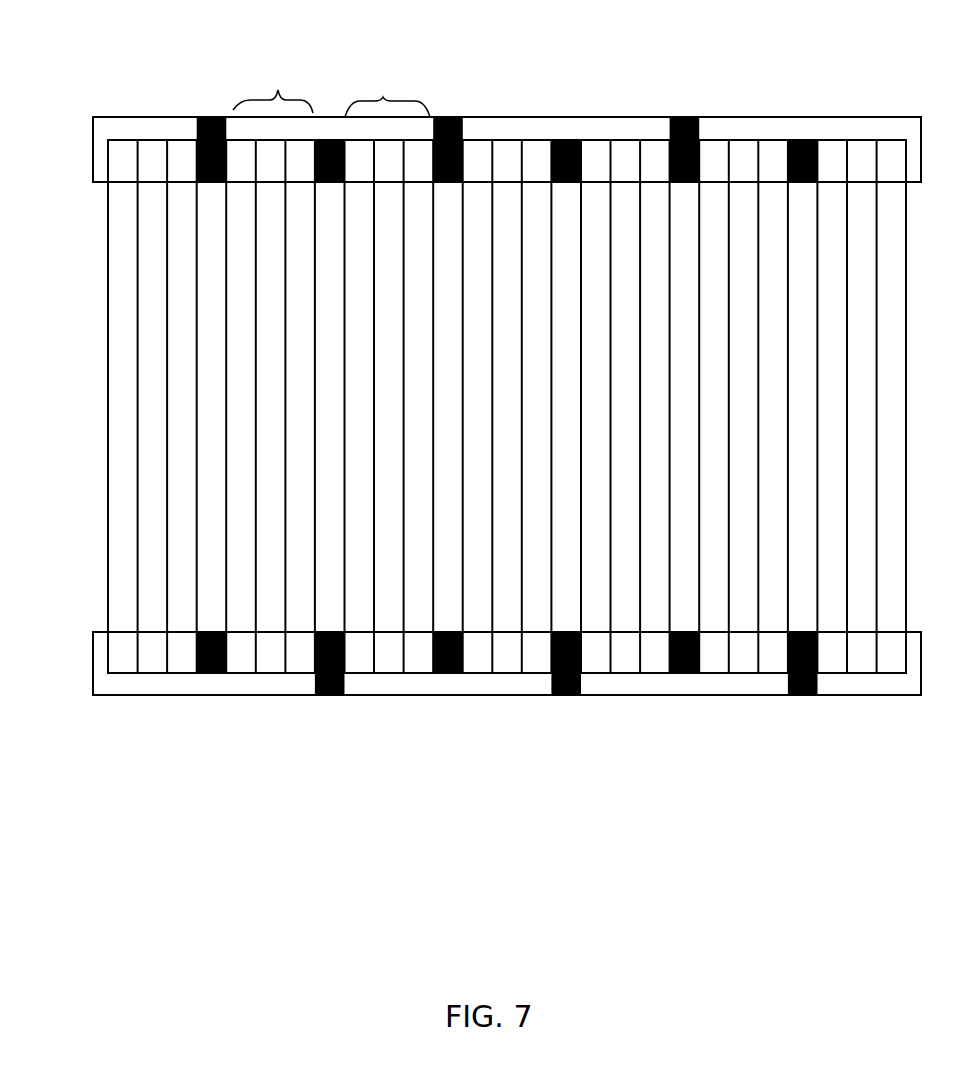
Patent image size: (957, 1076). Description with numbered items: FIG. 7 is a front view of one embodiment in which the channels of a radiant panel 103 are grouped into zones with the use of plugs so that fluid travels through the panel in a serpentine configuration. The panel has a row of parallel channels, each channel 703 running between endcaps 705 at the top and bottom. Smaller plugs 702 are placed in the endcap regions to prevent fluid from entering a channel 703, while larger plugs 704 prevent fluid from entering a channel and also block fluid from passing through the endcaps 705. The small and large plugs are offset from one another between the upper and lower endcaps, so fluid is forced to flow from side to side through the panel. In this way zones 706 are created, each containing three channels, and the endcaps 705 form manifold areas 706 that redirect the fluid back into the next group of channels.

The radiant panel 103 is at (107, 210).
The smaller plugs 702 is at (212, 673).
The channel 703 is at (118, 370).
The larger plugs 704 is at (205, 117).
The endcaps 705 is at (155, 117).
The zones 706 is at (383, 88).